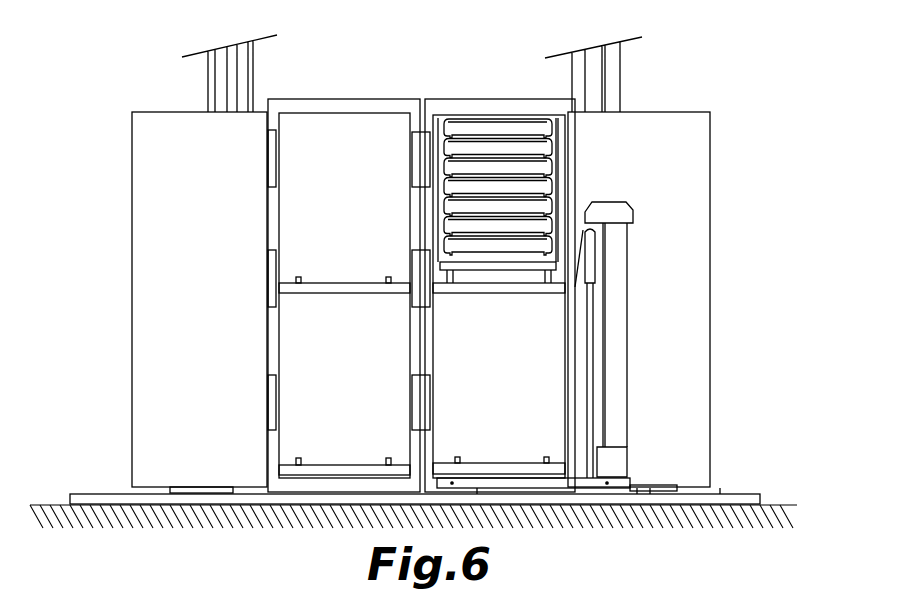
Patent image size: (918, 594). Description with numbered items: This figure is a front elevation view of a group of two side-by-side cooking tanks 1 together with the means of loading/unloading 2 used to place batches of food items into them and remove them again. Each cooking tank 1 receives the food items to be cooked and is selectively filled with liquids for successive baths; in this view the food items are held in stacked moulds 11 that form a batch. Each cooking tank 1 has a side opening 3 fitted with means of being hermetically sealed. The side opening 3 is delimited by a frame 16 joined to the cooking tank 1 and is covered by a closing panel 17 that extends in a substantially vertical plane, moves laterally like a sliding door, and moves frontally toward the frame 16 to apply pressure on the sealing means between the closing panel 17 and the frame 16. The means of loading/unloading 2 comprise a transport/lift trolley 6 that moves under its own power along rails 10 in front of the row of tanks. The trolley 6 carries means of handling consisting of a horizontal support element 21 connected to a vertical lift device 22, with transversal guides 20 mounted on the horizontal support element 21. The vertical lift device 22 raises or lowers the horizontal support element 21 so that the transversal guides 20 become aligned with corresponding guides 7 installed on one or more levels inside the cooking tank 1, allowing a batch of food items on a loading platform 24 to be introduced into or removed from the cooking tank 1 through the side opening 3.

The cooking tank 1 is at (514, 314).
The means of loading/unloading 2 is at (667, 340).
The side opening 3 is at (373, 125).
The transport/lift trolley 6 is at (503, 485).
The guides 7 is at (299, 275).
The rails 10 is at (99, 500).
The stacked moulds 11 is at (498, 130).
The frame 16 is at (310, 103).
The closing panel 17 is at (133, 219).
The transversal guides 20 is at (460, 275).
The horizontal support element 21 is at (515, 287).
The vertical lift device 22 is at (622, 348).
The loading platform 24 is at (483, 263).